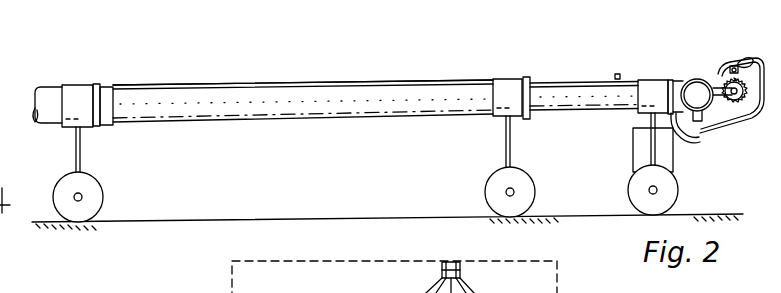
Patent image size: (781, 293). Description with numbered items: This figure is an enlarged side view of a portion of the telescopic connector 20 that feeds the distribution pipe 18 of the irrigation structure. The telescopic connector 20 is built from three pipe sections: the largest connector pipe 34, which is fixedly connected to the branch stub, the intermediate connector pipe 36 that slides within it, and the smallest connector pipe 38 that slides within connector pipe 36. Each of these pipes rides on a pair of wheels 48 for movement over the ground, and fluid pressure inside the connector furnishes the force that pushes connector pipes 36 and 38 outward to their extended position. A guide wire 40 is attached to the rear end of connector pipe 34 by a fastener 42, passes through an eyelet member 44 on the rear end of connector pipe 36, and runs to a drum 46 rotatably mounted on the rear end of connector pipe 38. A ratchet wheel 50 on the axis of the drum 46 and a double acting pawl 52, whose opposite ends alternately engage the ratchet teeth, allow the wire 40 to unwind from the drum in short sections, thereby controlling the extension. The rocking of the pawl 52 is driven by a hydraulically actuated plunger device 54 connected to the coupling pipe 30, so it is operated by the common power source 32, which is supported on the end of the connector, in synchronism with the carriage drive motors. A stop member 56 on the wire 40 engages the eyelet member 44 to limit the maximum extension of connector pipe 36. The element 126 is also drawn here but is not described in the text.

The distribution pipe 18 is at (698, 79).
The telescopic connector 20 is at (224, 121).
The coupling pipe 30 is at (686, 148).
The common power source 32 is at (633, 138).
The connector pipe 34 is at (54, 91).
The connector pipe 36 is at (430, 108).
The connector pipe 38 is at (565, 103).
The guide wire 40 is at (383, 80).
The fastener 42 is at (100, 85).
The eyelet member 44 is at (527, 78).
The drum 46 is at (750, 112).
The wheels 48 is at (100, 203).
The ratchet wheel 50 is at (735, 105).
The double acting pawl 52 is at (736, 64).
The hydraulically actuated plunger device 54 is at (746, 58).
The stop member 56 is at (618, 73).
The sprinkler nozzle 126 is at (462, 270).